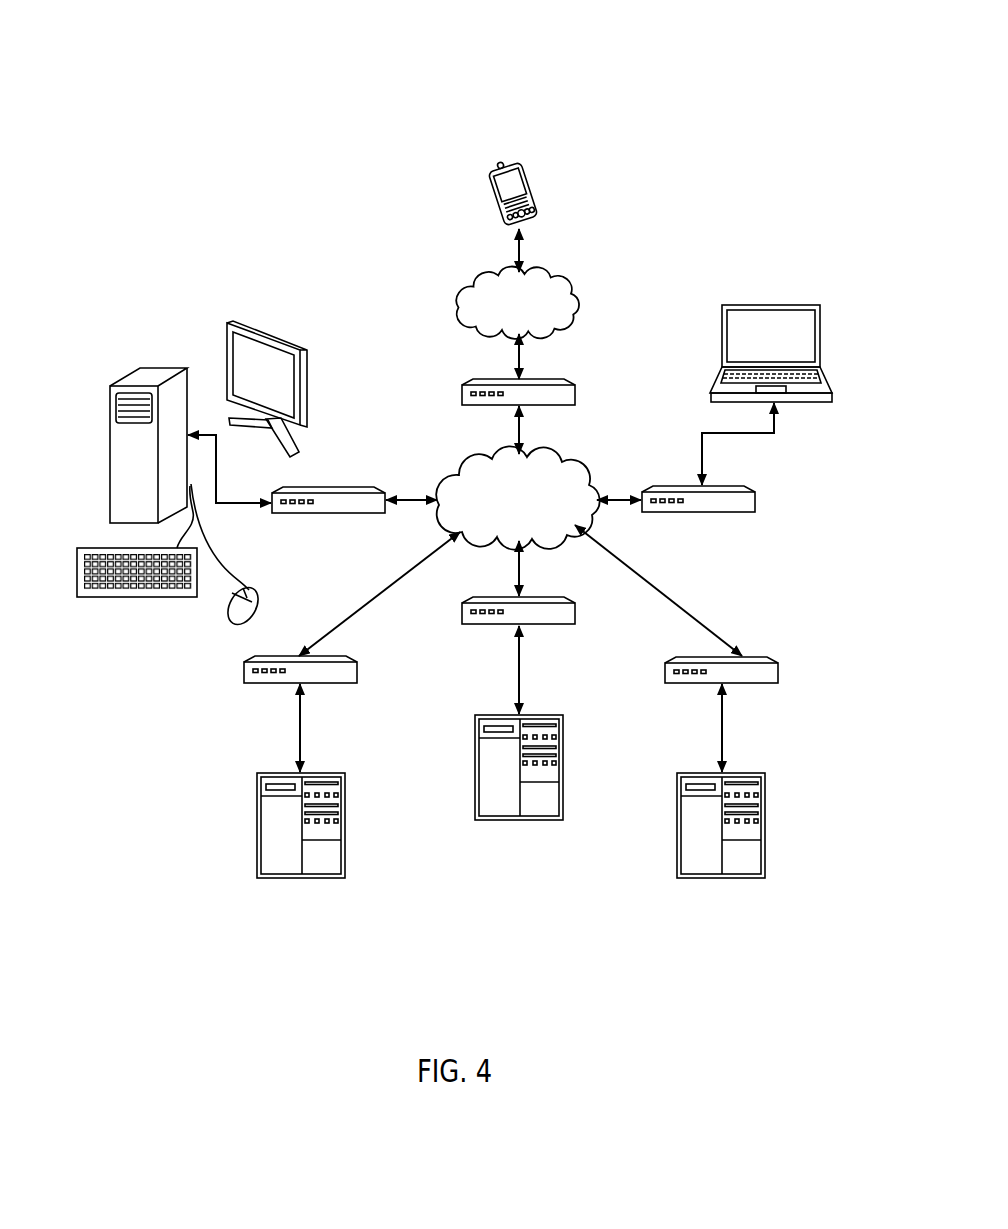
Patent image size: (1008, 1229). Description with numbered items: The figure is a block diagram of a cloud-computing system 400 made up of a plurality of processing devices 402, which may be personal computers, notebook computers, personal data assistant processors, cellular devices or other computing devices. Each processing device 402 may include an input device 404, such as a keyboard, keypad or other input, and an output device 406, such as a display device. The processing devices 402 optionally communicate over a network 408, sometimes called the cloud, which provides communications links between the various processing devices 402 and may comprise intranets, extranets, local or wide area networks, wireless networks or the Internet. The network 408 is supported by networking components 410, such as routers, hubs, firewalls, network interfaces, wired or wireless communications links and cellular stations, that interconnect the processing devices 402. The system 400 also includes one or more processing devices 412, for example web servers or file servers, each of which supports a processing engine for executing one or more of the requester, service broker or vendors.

The cloud-computing system 400 is at (307, 78).
The processing device 402 is at (108, 452).
The input device 404 is at (158, 598).
The output device 406 is at (309, 367).
The network 408 is at (579, 298).
The networking component 410 is at (578, 398).
The processing device (server) 412 is at (347, 812).